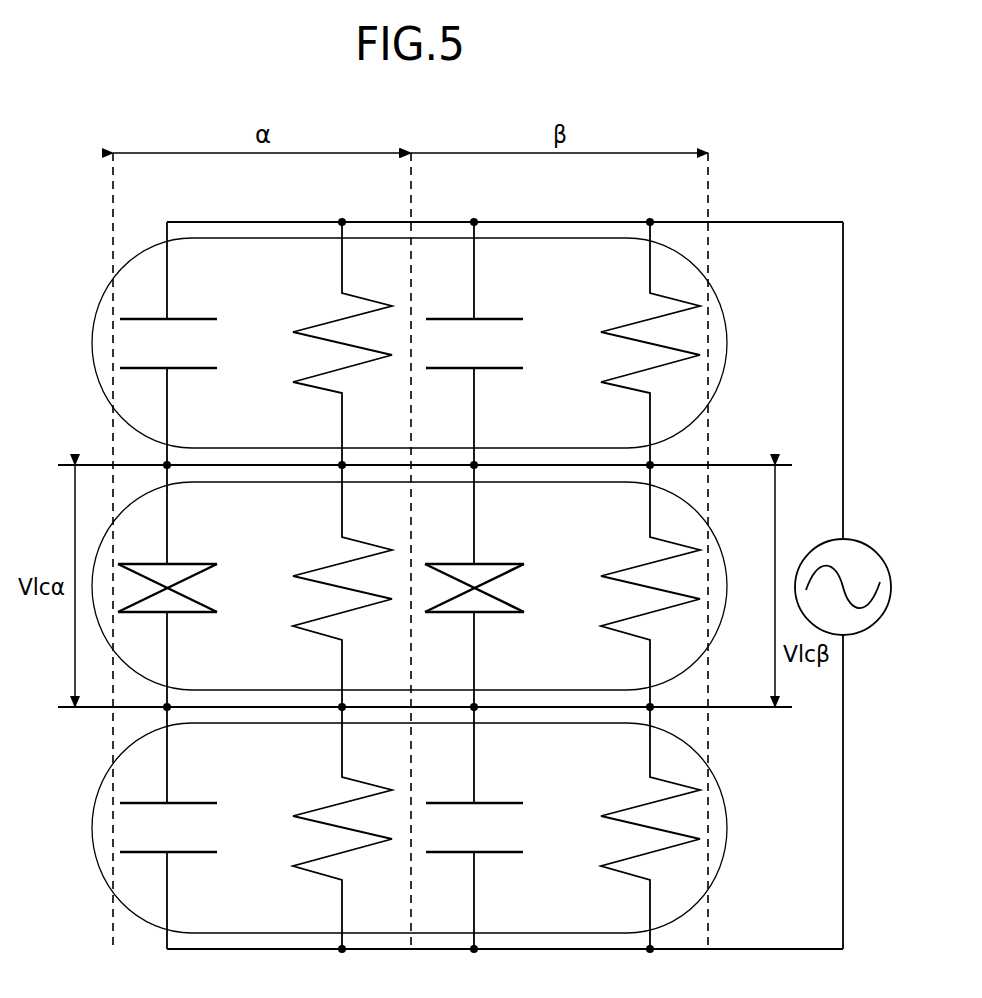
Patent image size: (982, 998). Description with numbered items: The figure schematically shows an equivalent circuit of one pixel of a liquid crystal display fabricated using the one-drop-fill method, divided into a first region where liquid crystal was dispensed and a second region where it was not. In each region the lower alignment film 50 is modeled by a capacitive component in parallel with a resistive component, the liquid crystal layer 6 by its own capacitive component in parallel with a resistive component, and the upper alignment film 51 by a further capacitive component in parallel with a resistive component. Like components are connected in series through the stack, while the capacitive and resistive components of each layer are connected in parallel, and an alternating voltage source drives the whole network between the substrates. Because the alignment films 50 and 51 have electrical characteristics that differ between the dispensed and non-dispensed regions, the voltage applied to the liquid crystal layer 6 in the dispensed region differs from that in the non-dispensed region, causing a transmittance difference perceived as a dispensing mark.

The alignment film 51 is at (722, 300).
The liquid crystal layer 6 is at (710, 543).
The alignment film 50 is at (720, 788).